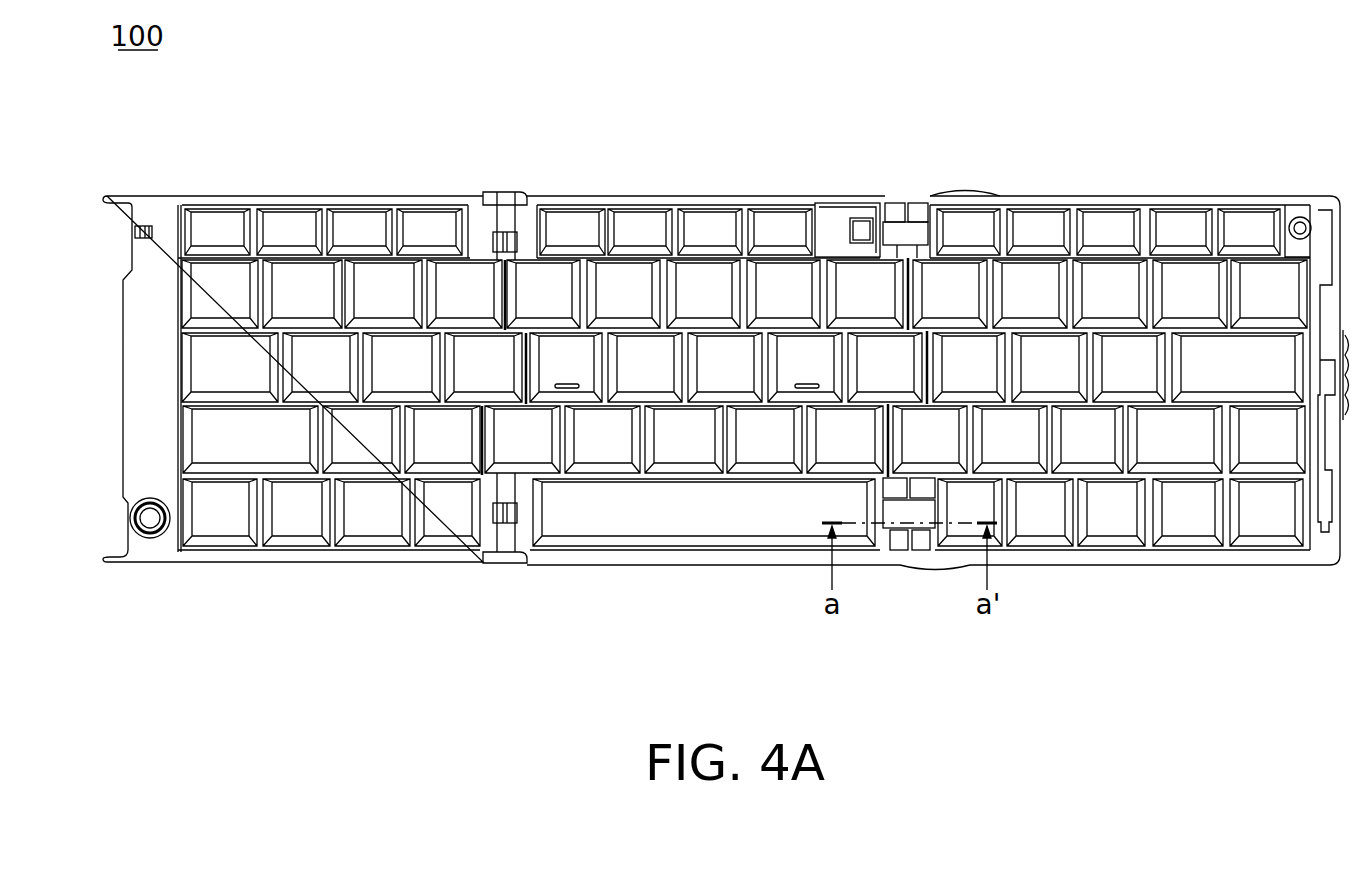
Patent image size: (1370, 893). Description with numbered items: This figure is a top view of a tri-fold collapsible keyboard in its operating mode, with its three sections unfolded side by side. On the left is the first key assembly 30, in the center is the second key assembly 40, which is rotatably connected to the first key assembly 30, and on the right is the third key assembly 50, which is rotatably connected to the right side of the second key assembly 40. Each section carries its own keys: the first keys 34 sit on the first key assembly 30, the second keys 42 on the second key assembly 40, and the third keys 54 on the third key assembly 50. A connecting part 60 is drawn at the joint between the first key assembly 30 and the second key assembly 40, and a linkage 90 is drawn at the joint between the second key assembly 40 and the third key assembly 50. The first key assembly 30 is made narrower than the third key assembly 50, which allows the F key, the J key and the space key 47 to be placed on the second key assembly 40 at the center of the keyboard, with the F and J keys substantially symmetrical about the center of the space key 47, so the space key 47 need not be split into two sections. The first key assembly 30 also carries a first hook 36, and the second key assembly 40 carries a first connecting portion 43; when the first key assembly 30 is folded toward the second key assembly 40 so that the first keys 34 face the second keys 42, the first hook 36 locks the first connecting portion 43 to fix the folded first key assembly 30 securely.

The first key assembly 30 is at (358, 196).
The first keys 34 is at (290, 228).
The first hook 36 is at (144, 226).
The second key assembly 40 is at (712, 196).
The second keys 42 is at (640, 228).
The first connecting portion 43 is at (862, 228).
The space key 47 is at (633, 522).
The third key assembly 50 is at (1117, 196).
The third keys 54 is at (1045, 228).
The connecting part 60 is at (503, 192).
The linkage 90 is at (918, 232).